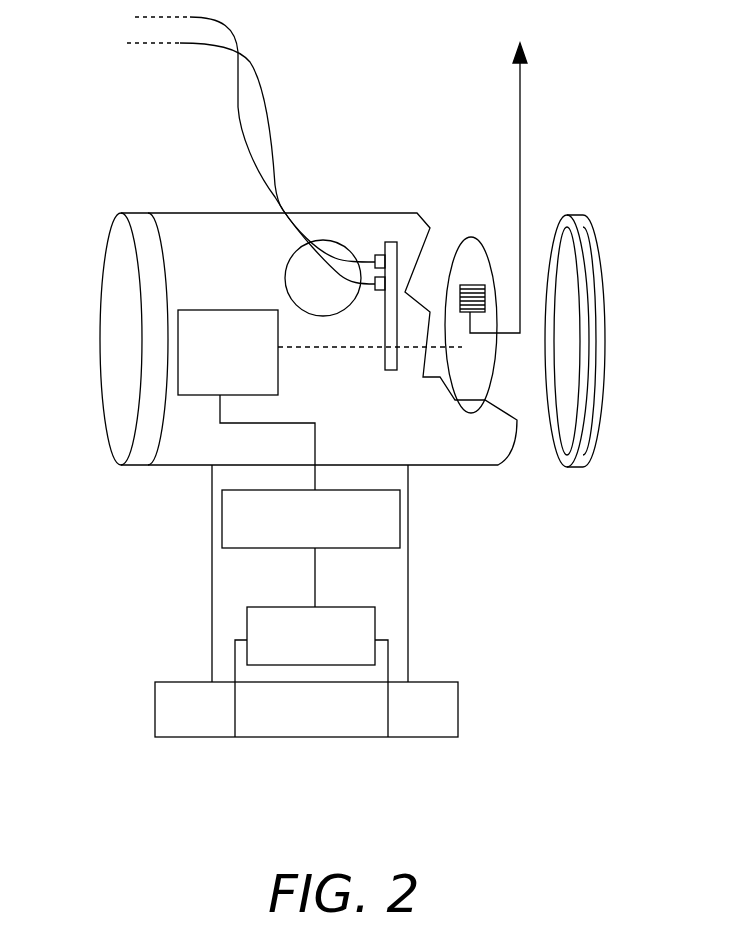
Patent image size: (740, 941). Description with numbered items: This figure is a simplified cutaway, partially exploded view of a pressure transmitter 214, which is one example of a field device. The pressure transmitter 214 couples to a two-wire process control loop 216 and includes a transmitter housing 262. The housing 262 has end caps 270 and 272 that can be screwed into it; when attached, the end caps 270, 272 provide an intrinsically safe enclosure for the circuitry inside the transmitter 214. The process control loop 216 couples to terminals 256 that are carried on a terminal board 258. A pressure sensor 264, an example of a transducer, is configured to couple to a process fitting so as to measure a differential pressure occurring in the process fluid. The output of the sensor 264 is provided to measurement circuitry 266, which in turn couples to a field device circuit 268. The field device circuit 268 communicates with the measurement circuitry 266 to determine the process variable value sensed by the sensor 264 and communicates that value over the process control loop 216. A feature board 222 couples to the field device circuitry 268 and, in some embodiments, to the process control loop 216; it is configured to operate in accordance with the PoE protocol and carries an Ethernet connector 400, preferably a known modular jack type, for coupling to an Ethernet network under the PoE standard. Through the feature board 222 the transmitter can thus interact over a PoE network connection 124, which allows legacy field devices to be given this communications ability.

The PoE network connection 124 is at (521, 100).
The pressure transmitter 214 is at (168, 184).
The two-wire process control loop 216 is at (240, 107).
The feature board 222 is at (463, 240).
The terminals 256 is at (377, 254).
The terminal board 258 is at (395, 242).
The transmitter housing 262 is at (211, 520).
The pressure sensor 264 is at (376, 620).
The measurement circuitry 266 is at (247, 549).
The field device circuit 268 is at (197, 396).
The end cap 270 is at (118, 340).
The end cap 272 is at (573, 217).
The Ethernet connector 400 is at (478, 286).